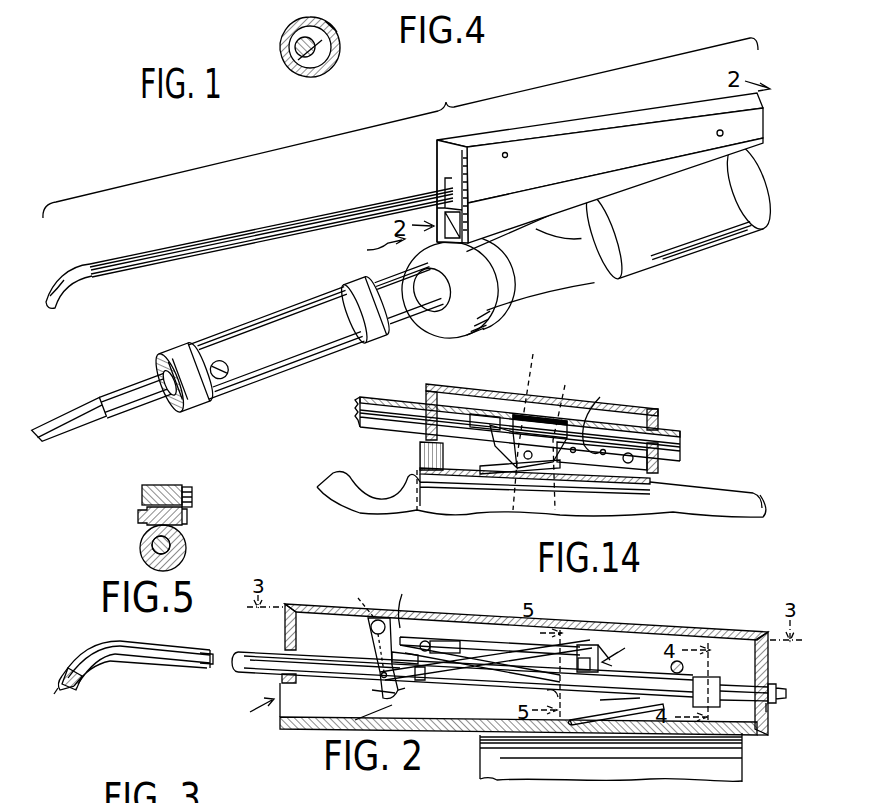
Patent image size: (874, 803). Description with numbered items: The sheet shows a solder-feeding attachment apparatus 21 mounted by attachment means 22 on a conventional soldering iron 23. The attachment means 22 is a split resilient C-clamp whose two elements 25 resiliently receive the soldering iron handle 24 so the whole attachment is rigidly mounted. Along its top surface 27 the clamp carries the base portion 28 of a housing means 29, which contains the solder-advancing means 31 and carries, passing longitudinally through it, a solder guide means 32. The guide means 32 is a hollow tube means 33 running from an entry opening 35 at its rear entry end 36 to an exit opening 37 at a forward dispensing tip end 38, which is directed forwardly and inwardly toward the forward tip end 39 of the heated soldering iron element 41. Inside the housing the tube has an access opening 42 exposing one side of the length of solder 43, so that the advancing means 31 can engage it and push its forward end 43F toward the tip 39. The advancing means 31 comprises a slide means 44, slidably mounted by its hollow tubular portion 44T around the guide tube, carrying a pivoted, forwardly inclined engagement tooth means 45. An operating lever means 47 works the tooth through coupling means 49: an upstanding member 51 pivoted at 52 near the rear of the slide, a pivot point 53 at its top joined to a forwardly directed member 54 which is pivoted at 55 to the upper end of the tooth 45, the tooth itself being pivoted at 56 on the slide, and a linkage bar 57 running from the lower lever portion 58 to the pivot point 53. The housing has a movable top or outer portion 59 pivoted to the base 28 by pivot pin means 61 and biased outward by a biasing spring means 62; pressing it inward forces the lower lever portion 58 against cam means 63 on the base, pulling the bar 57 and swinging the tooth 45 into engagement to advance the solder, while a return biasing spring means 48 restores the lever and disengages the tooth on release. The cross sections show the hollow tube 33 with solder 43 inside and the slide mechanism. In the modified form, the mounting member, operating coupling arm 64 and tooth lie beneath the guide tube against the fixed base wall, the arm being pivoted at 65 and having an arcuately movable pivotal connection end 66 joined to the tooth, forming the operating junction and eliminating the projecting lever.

In FIG. 1, the attachment apparatus 21 is at (400, 128).
In FIG. 1, the attachment means 22 is at (623, 280).
In FIG. 14, the attachment means 22 is at (541, 495).
In FIG. 2, the attachment means 22 is at (464, 785).
In FIG. 1, the soldering iron 23 is at (424, 328).
In FIG. 1, the handle 24 is at (556, 268).
In FIG. 1, the elements 25 is at (770, 182).
In FIG. 2, the elements 25 is at (727, 775).
In FIG. 2, the top surface 27 is at (480, 733).
In FIG. 1, the base portion 28 is at (628, 177).
In FIG. 14, the base portion 28 is at (660, 478).
In FIG. 2, the base portion 28 is at (291, 730).
In FIG. 1, the housing means 29 is at (373, 248).
In FIG. 14, the housing means 29 is at (411, 445).
In FIG. 2, the housing means 29 is at (249, 712).
In FIG. 14, the solder-advancing means 31 is at (495, 464).
In FIG. 2, the solder-advancing means 31 is at (468, 633).
In FIG. 1, the solder guide means 32 is at (249, 250).
In FIG. 3, the solder guide means 32 is at (112, 672).
In FIG. 14, the solder guide means 32 is at (350, 417).
In FIG. 1, the hollow tube means 33 is at (204, 242).
In FIG. 4, the hollow tube means 33 is at (293, 72).
In FIG. 5, the hollow tube means 33 is at (182, 553).
In FIG. 3, the hollow tube means 33 is at (185, 660).
In FIG. 14, the hollow tube means 33 is at (382, 410).
In FIG. 2, the entry opening 35 is at (770, 702).
In FIG. 2, the rear entry end 36 is at (776, 686).
In FIG. 3, the exit opening 37 is at (77, 687).
In FIG. 1, the forward dispensing tip end 38 is at (58, 305).
In FIG. 3, the forward dispensing tip end 38 is at (60, 674).
In FIG. 1, the forward tip end 39 is at (64, 412).
In FIG. 1, the soldering iron element 41 is at (82, 450).
In FIG. 14, the access opening means 42 is at (487, 454).
In FIG. 2, the access opening means 42 is at (366, 668).
In FIG. 4, the length of solder 43 is at (316, 55).
In FIG. 5, the length of solder 43 is at (182, 546).
In FIG. 14, the length of solder 43 is at (502, 406).
In FIG. 2, the length of solder 43 is at (231, 670).
In FIG. 3, the forward end 43F is at (55, 693).
In FIG. 14, the slide means 44 is at (560, 456).
In FIG. 2, the slide means 44 is at (626, 652).
In FIG. 2, the hollow tubular portion 44T is at (613, 712).
In FIG. 14, the engagement tooth means 45 is at (487, 413).
In FIG. 2, the engagement tooth means 45 is at (414, 654).
In FIG. 14, the operating lever means 47 is at (492, 486).
In FIG. 2, the operating lever means 47 is at (404, 601).
In FIG. 14, the return biasing spring means 48 is at (536, 422).
In FIG. 2, the return biasing spring means 48 is at (360, 600).
In FIG. 2, the coupling means 49 is at (507, 675).
In FIG. 2, the upstanding member 51 is at (597, 650).
In FIG. 5, the pivotal mounting 52 is at (138, 517).
In FIG. 2, the pivotal mounting 52 is at (598, 668).
In FIG. 5, the pivot point 53 is at (140, 491).
In FIG. 2, the pivot point 53 is at (588, 645).
In FIG. 5, the forwardly directed member 54 is at (187, 485).
In FIG. 2, the forwardly directed member 54 is at (440, 641).
In FIG. 2, the pivotal connection 55 is at (426, 641).
In FIG. 2, the pivotal mounting 56 is at (411, 702).
In FIG. 5, the linkage bar 57 is at (192, 499).
In FIG. 2, the linkage bar 57 is at (423, 680).
In FIG. 2, the lower lever portion 58 is at (372, 690).
In FIG. 1, the top or outer housing portion 59 is at (600, 157).
In FIG. 14, the top or outer housing portion 59 is at (642, 409).
In FIG. 2, the top or outer housing portion 59 is at (303, 604).
In FIG. 1, the pivot pin means 61 is at (723, 133).
In FIG. 2, the pivot pin means 61 is at (689, 666).
In FIG. 2, the biasing spring means 62 is at (622, 716).
In FIG. 2, the cam means 63 is at (368, 703).
In FIG. 14, the operating coupling arm 64 is at (528, 462).
In FIG. 14, the pivotal mounting 65 is at (606, 416).
In FIG. 14, the pivotal connection end 66 is at (572, 438).